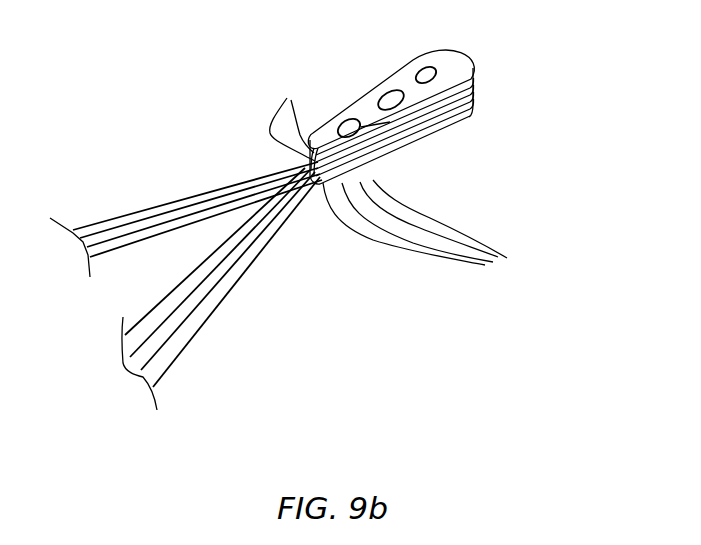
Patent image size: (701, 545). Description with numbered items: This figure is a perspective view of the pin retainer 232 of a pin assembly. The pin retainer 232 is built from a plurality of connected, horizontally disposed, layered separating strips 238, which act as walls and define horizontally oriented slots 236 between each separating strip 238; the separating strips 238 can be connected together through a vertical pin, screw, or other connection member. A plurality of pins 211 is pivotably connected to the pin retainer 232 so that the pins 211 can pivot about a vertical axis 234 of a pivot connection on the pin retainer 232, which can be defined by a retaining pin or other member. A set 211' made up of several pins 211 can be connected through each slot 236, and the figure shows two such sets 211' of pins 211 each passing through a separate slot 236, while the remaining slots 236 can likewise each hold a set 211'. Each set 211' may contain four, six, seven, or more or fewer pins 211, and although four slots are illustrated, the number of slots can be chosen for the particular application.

The pins 211 is at (172, 287).
The set of pins 211' is at (209, 314).
The pin retainer 232 is at (470, 72).
The vertical axis 234 is at (442, 135).
The slots 236 is at (438, 232).
The separating strips 238 is at (297, 121).